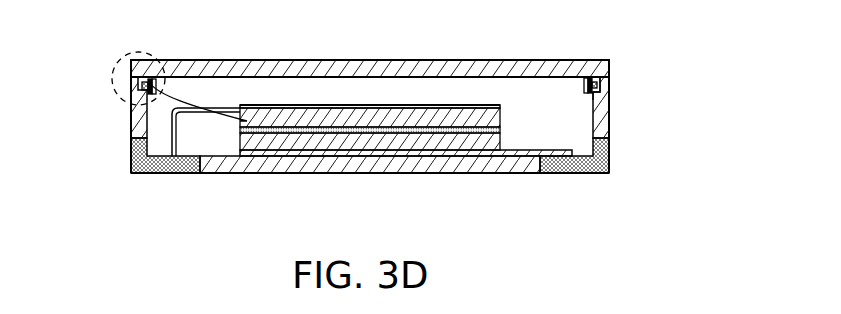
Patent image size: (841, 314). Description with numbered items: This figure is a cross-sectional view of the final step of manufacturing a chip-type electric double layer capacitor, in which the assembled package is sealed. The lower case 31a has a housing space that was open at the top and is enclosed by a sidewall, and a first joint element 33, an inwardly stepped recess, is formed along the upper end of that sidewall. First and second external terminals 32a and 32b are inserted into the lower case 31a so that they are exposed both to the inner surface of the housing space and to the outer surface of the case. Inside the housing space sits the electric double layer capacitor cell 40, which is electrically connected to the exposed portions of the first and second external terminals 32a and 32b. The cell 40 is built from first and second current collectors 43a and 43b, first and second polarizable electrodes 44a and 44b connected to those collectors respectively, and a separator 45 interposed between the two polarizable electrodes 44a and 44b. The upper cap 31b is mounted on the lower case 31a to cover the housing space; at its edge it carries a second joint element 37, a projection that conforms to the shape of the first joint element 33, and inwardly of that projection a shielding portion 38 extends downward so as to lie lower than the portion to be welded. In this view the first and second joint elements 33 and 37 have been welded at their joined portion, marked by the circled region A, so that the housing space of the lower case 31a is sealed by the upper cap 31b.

The lower case 31a is at (608, 133).
The upper cap 31b is at (611, 66).
The first external terminal 32a is at (166, 174).
The second external terminal 32b is at (580, 173).
The first joint element 33 is at (596, 90).
The second joint element 37 is at (598, 77).
The shielding portion 38 is at (587, 87).
The electric double layer capacitor cell 40 is at (372, 100).
The first current collector 43a is at (172, 137).
The second current collector 43b is at (455, 156).
The first polarizable electrode 44a is at (148, 88).
The second polarizable electrode 44b is at (388, 141).
The separator 45 is at (326, 135).
The detail region A is at (133, 50).